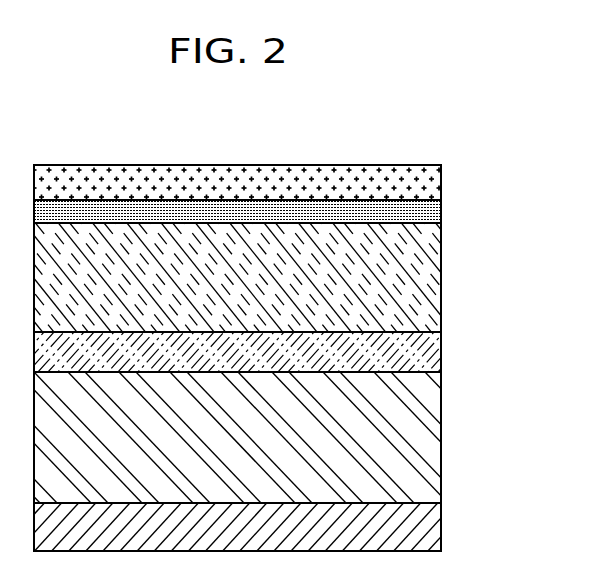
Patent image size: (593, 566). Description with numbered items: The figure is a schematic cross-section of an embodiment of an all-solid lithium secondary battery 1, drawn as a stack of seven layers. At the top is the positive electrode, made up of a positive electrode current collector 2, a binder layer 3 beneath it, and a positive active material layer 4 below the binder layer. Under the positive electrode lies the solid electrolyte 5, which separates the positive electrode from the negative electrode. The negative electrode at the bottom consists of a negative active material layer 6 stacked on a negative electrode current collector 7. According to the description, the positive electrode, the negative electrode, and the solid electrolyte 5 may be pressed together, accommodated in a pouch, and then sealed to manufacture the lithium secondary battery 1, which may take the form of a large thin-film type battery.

The lithium secondary battery 1 is at (505, 142).
The positive electrode current collector 2 is at (441, 183).
The binder layer 3 is at (441, 213).
The positive active material layer 4 is at (432, 275).
The solid electrolyte 5 is at (433, 354).
The negative active material layer 6 is at (433, 435).
The negative electrode current collector 7 is at (433, 525).